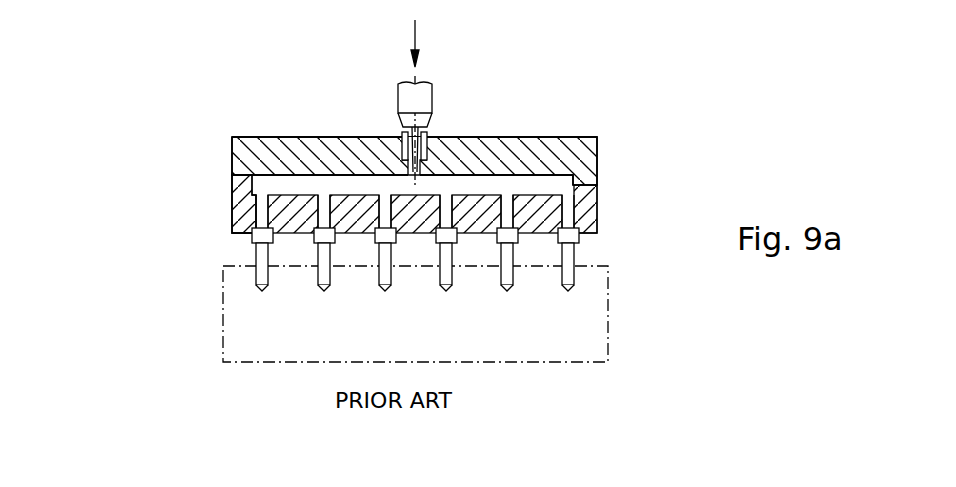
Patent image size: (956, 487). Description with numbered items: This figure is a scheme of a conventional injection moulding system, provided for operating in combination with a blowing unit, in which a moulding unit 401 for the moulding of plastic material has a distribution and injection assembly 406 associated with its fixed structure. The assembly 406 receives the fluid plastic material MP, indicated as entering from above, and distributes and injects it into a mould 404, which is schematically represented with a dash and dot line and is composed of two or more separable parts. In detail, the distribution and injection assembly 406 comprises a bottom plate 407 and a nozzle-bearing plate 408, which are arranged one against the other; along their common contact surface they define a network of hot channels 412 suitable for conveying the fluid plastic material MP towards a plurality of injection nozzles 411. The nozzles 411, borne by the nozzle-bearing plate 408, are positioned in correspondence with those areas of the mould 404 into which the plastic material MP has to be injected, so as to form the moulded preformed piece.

The moulding unit 401 is at (116, 131).
The mould 404 is at (228, 326).
The distribution and injection assembly 406 is at (631, 148).
The bottom plate 407 is at (233, 160).
The nozzle-bearing plate 408 is at (233, 207).
The injection nozzles 411 is at (443, 275).
The hot channels 412 is at (488, 171).
The fluid plastic material MP is at (418, 36).